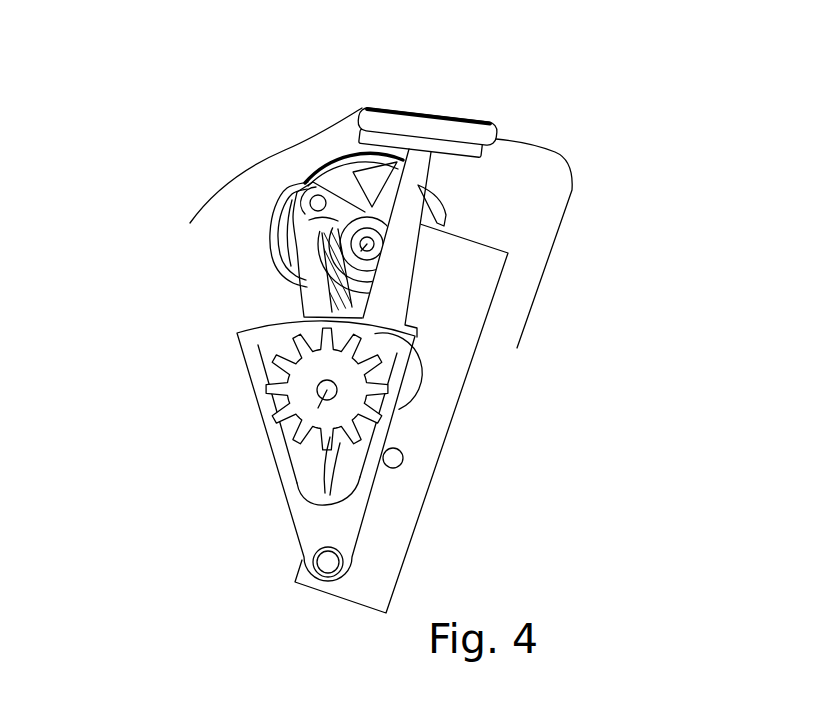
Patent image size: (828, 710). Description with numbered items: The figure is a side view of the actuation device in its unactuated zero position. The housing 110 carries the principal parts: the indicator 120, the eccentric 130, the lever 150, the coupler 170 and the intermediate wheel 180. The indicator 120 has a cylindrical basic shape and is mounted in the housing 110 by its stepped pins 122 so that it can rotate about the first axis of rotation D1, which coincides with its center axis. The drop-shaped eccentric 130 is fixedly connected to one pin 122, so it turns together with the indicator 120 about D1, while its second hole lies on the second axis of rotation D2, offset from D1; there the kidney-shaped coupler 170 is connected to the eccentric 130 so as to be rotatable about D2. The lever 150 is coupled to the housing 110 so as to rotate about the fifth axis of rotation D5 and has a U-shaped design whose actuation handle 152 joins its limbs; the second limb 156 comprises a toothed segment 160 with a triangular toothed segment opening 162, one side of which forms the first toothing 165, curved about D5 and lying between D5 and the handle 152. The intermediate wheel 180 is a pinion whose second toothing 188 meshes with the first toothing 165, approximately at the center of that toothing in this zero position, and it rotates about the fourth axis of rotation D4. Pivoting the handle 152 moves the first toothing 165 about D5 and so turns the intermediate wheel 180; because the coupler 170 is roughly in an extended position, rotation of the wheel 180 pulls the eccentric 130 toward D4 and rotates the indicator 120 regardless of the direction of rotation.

The housing 110 is at (390, 523).
The indicator 120 is at (337, 163).
The stepped pins 122 is at (387, 238).
The eccentric 130 is at (295, 192).
The lever 150 is at (420, 162).
The actuation handle 152 is at (416, 118).
The second limb 156 is at (398, 298).
The toothed segment 160 is at (285, 460).
The toothed segment opening 162 is at (313, 478).
The first toothing 165 is at (397, 333).
The coupler 170 is at (308, 288).
The intermediate wheel 180 is at (316, 390).
The second toothing 188 is at (372, 425).
The first axis of rotation D1 is at (290, 264).
The second axis of rotation D2 is at (311, 197).
The fourth axis of rotation D4 is at (297, 407).
The fifth axis of rotation D5 is at (326, 560).